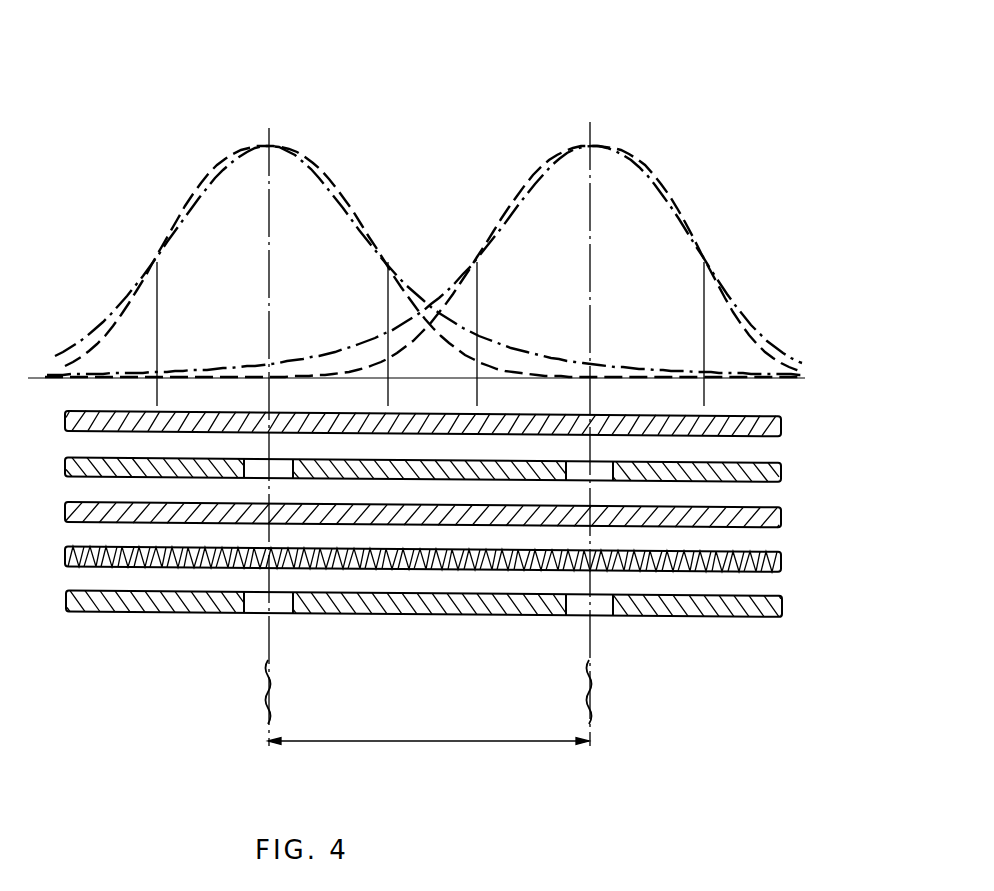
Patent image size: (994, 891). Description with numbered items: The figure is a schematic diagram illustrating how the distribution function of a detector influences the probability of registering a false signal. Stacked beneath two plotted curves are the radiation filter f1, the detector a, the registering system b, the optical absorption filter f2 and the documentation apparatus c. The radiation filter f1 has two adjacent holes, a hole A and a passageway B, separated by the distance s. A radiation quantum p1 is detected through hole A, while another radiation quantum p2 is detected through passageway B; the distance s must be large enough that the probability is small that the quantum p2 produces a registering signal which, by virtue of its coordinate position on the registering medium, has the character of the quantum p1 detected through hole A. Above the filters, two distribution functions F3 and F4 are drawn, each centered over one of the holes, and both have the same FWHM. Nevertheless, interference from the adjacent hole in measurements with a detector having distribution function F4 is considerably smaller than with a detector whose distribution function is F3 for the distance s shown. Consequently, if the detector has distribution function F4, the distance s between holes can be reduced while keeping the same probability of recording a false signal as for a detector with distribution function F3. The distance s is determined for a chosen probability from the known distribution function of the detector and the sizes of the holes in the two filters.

The distribution function F3 is at (328, 32).
The distribution function F4 is at (328, 60).
The full width at half maximum FWHM is at (388, 402).
The documentation apparatus c is at (787, 423).
The optical absorption filter f2 is at (787, 470).
The registering system b is at (787, 516).
The detector a is at (787, 562).
The radiation filter f1 is at (787, 607).
The hole A is at (268, 613).
The passageway B is at (586, 613).
The radiation quantum p1 is at (284, 692).
The radiation quantum p2 is at (608, 692).
The distance between two adjacent holes s is at (428, 731).